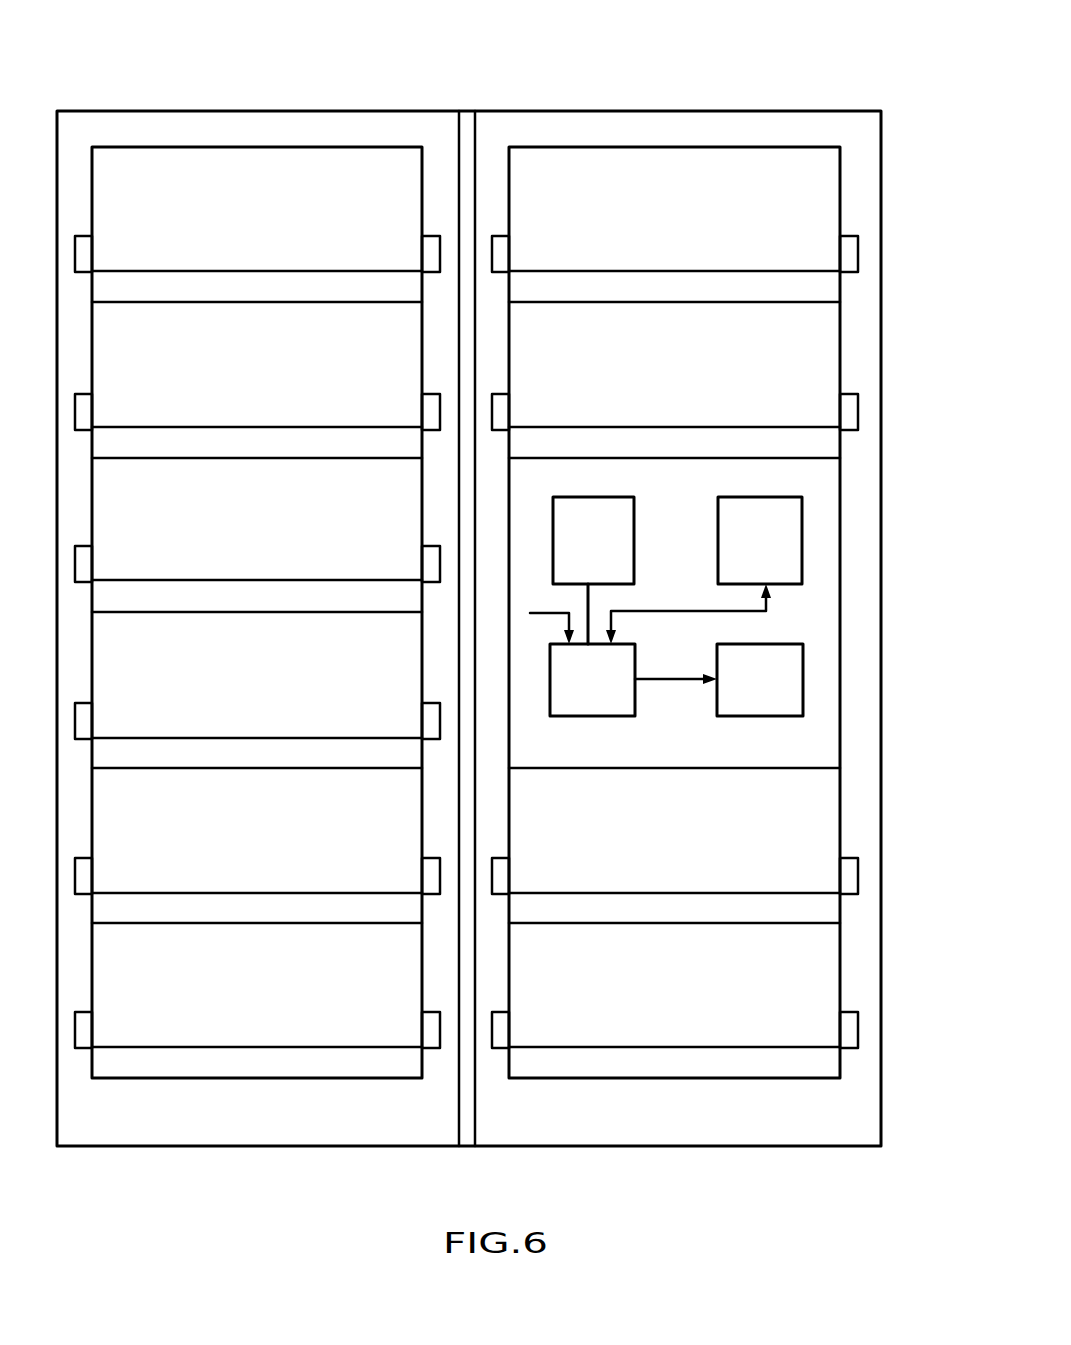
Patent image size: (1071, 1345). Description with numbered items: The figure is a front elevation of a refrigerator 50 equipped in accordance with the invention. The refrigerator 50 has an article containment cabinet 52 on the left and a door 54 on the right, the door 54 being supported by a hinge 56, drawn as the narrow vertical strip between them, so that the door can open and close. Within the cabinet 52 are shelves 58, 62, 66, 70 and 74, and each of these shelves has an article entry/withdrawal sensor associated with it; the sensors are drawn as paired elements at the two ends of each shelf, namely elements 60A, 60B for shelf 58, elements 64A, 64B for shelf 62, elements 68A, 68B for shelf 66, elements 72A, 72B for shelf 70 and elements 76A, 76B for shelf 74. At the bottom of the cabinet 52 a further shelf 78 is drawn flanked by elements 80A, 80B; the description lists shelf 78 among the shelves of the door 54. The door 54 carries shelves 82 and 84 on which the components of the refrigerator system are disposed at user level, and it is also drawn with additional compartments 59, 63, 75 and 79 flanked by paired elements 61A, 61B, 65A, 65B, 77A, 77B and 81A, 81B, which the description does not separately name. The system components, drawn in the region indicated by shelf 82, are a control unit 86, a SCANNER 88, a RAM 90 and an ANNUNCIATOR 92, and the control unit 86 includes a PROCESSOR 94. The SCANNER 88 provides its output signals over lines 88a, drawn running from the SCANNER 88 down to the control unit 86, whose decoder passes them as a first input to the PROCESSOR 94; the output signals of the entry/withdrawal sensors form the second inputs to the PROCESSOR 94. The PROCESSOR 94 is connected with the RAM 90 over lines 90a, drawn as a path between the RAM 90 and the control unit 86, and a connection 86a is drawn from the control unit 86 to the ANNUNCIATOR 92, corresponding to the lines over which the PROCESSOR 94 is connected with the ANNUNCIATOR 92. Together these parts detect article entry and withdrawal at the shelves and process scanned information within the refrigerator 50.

The refrigerator 50 is at (858, 97).
The article containment cabinet 52 is at (328, 130).
The door 54 is at (662, 135).
The hinge 56 is at (465, 127).
The shelf 58 is at (252, 282).
The drawer 59 is at (669, 282).
The article entry/withdrawal sensor 60A is at (85, 252).
The article entry/withdrawal sensor 60B is at (428, 254).
The drawer side rail 61A is at (502, 252).
The drawer side rail 61B is at (846, 254).
The shelf 62 is at (252, 440).
The drawer 63 is at (669, 440).
The article entry/withdrawal sensor 64A is at (85, 410).
The article entry/withdrawal sensor 64B is at (428, 412).
The drawer side rail 65A is at (502, 410).
The drawer side rail 65B is at (846, 412).
The shelf 66 is at (252, 592).
The article entry/withdrawal sensor 68A is at (85, 562).
The article entry/withdrawal sensor 68B is at (428, 564).
The shelf 70 is at (252, 749).
The article entry/withdrawal sensor 72A is at (85, 719).
The article entry/withdrawal sensor 72B is at (428, 721).
The shelf 74 is at (252, 904).
The drawer 75 is at (669, 904).
The article entry/withdrawal sensor 76A is at (85, 874).
The article entry/withdrawal sensor 76B is at (428, 876).
The drawer side rail 77A is at (502, 874).
The drawer side rail 77B is at (846, 876).
The shelf 78 is at (252, 1058).
The drawer 79 is at (669, 1058).
The shelf 80A is at (85, 1028).
The shelf 80B is at (428, 1030).
The drawer side rail 81A is at (502, 1028).
The drawer side rail 81B is at (846, 1030).
The shelf 82 is at (780, 625).
The shelf 84 is at (646, 843).
The control unit 86 is at (597, 711).
The controller output line 86a is at (663, 677).
The scanner 88 is at (597, 507).
The lines 88a is at (590, 596).
The RAM 90 is at (772, 505).
The lines 90a is at (668, 612).
The annunciator 92 is at (773, 708).
The processor 94 is at (548, 613).